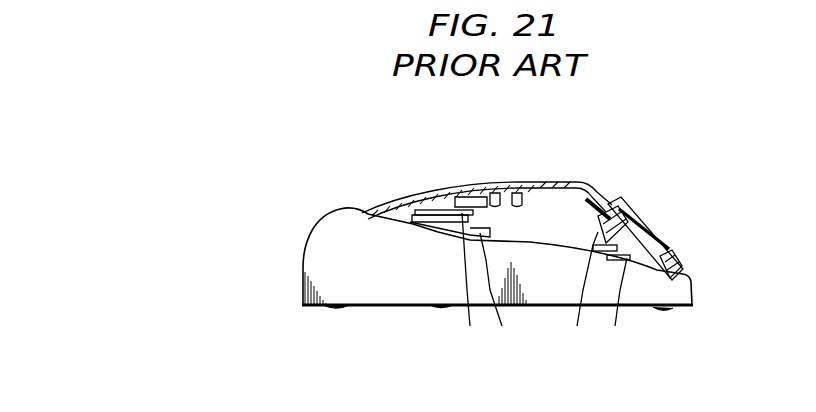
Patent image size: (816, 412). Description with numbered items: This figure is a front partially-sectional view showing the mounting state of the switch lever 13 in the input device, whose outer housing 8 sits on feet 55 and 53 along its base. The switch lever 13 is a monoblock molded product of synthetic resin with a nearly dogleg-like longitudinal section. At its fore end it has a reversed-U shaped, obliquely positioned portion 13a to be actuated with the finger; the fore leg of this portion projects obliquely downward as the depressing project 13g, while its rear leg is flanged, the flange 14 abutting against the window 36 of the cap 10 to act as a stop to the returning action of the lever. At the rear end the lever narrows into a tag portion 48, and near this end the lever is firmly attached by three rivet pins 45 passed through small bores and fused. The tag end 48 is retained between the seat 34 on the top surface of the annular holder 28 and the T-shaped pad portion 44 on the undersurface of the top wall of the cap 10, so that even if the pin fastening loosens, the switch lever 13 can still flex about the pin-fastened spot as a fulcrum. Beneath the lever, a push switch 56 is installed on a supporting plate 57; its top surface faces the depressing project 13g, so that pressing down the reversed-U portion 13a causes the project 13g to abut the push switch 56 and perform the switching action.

The housing 8 is at (311, 233).
The cap 10 is at (389, 196).
The switch lever 13 is at (587, 181).
The reversed-U shaped, oblique-positioned portion to be actuated 13a is at (660, 231).
The depressing project 13g is at (630, 207).
The flange 14 is at (677, 262).
The annular holder 28 is at (499, 292).
The seat 34 is at (473, 282).
The window 36 is at (613, 201).
The T-shaped pad portion 44 is at (455, 197).
The rivet pin 45 is at (496, 193).
The tag portion 48 is at (462, 197).
The foot 53 is at (438, 309).
The feet 55 is at (334, 309).
The push switch 56 is at (582, 291).
The supporting plate 57 is at (616, 304).